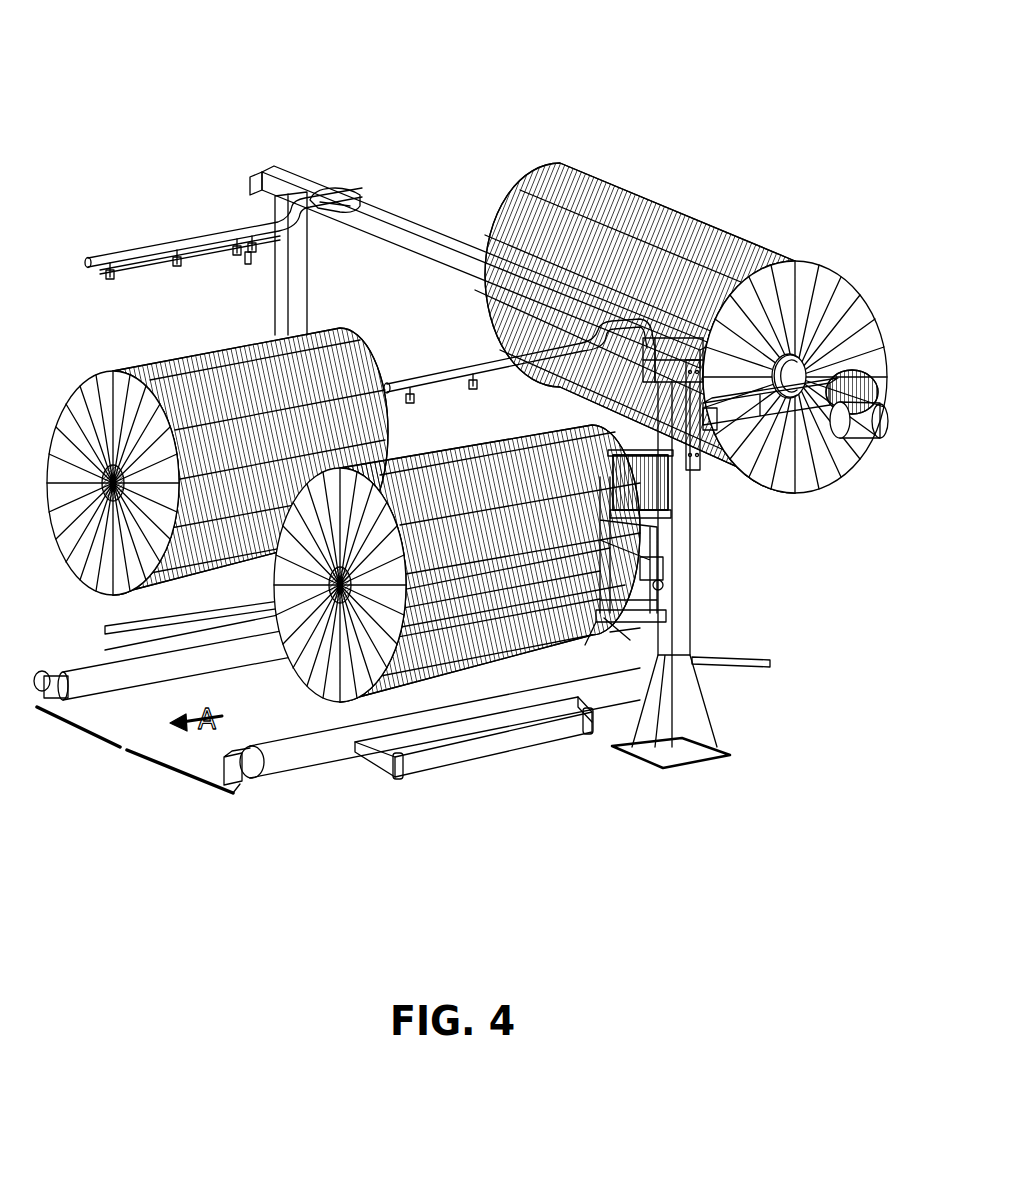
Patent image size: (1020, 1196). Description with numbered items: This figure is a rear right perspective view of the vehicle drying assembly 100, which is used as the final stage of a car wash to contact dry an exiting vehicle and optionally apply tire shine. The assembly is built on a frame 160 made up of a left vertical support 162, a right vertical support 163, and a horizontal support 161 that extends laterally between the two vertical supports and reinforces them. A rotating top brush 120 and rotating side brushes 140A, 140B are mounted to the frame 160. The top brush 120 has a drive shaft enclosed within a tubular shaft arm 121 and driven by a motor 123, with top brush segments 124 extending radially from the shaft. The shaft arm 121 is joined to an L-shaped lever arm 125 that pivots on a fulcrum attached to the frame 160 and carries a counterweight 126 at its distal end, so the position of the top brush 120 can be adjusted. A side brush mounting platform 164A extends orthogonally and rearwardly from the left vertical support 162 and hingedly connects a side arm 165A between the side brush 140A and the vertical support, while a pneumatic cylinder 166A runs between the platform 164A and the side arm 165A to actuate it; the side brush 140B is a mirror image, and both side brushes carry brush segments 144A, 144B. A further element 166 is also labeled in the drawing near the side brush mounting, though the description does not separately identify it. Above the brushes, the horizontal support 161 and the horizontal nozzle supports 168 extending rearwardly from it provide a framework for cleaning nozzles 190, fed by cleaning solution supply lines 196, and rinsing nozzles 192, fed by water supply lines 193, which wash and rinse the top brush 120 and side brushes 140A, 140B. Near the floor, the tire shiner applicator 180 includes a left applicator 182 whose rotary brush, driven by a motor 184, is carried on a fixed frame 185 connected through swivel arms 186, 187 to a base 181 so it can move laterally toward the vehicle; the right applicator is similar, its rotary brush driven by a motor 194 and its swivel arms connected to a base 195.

The vehicle drying assembly 100 is at (138, 66).
The top brush 120 is at (701, 336).
The shaft arm 121 is at (798, 381).
The motor 123 is at (858, 428).
The top brush segments 124 is at (850, 303).
The lever arm 125 is at (790, 410).
The counterweight 126 is at (622, 500).
The side brush 140A is at (434, 577).
The side brush 140B is at (196, 453).
The brush segments 144A is at (332, 688).
The brush segments 144B is at (67, 507).
The frame 160 is at (480, 240).
The horizontal support 161 is at (383, 233).
The left vertical support 162 is at (716, 553).
The right vertical support 163 is at (298, 285).
The side brush mounting platform 164A is at (627, 627).
The side arm 165A is at (633, 545).
The spray manifold 166 is at (432, 382).
The pneumatic cylinder 166A is at (606, 600).
The horizontal nozzle supports 168 is at (223, 226).
The tire shiner applicator 180 is at (127, 752).
The base 181 is at (471, 770).
The left applicator 182 is at (757, 666).
The motor 184 is at (228, 768).
The frame 185 is at (703, 672).
The swivel arm 186 is at (557, 712).
The swivel arm 187 is at (384, 758).
The cleaning nozzles 190 is at (250, 262).
The rinsing nozzles 192 is at (237, 250).
The water supply lines 193 is at (262, 212).
The motor 194 is at (64, 694).
The base 195 is at (328, 624).
The cleaning solution supply lines 196 is at (203, 245).